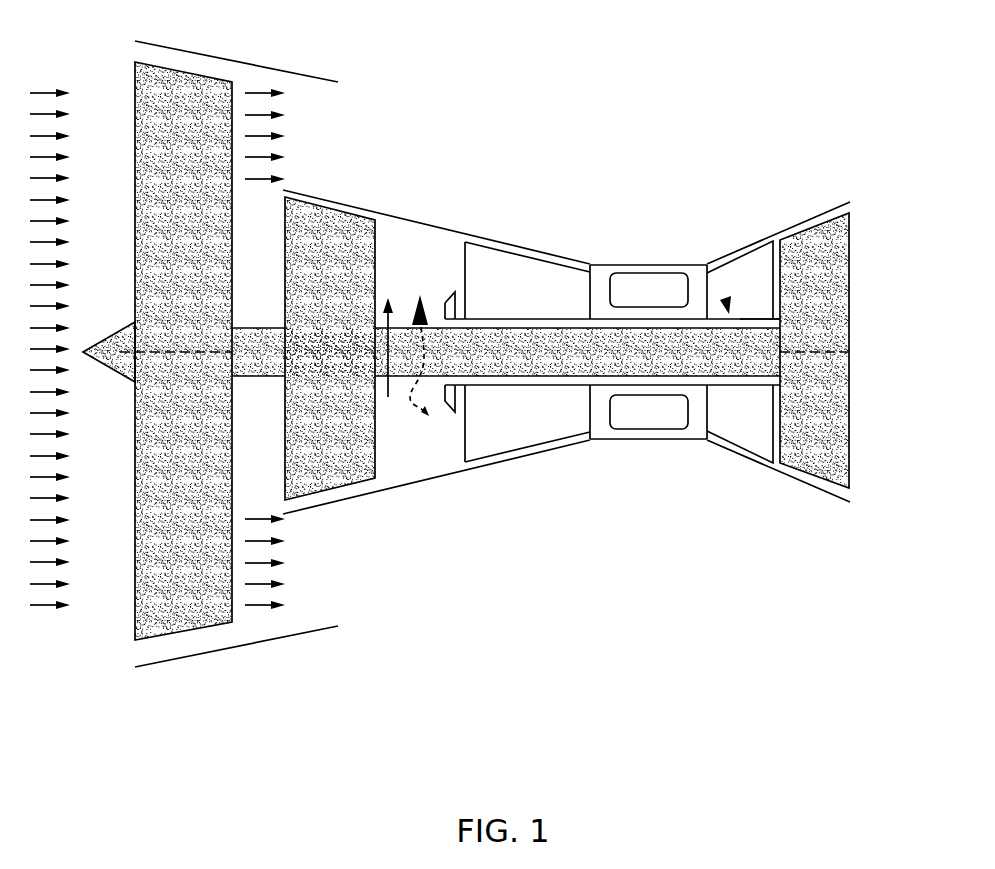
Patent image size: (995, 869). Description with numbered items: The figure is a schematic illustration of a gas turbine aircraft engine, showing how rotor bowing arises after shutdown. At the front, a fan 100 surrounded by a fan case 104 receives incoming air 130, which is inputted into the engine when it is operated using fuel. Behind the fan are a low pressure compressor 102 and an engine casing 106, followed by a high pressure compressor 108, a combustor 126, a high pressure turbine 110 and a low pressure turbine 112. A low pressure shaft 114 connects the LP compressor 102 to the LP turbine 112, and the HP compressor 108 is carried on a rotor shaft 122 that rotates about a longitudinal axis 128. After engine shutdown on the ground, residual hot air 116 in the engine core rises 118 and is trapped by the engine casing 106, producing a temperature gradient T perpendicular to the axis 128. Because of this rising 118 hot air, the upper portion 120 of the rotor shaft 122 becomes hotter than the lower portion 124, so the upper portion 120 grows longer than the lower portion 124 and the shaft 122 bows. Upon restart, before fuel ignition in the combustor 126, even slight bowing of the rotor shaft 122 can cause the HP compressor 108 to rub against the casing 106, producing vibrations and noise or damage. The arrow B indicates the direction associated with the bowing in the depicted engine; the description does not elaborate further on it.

The fan 100 is at (150, 264).
The low pressure compressor 102 is at (337, 197).
The fan case 104 is at (228, 58).
The engine casing 106 is at (357, 498).
The high pressure compressor 108 is at (528, 247).
The high pressure turbine 110 is at (756, 254).
The low pressure turbine 112 is at (846, 467).
The low pressure shaft 114 is at (650, 352).
The residual hot air 116 is at (418, 242).
The rising of hot air 118 is at (437, 358).
The upper portion of rotor shaft 120 is at (523, 322).
The rotor shaft 122 is at (767, 323).
The lower portion of rotor shaft 124 is at (523, 382).
The combustor 126 is at (662, 451).
The longitudinal axis 128 is at (836, 348).
The air 130 is at (250, 114).
The temperature gradient T is at (387, 336).
The bypass flow direction B is at (726, 300).